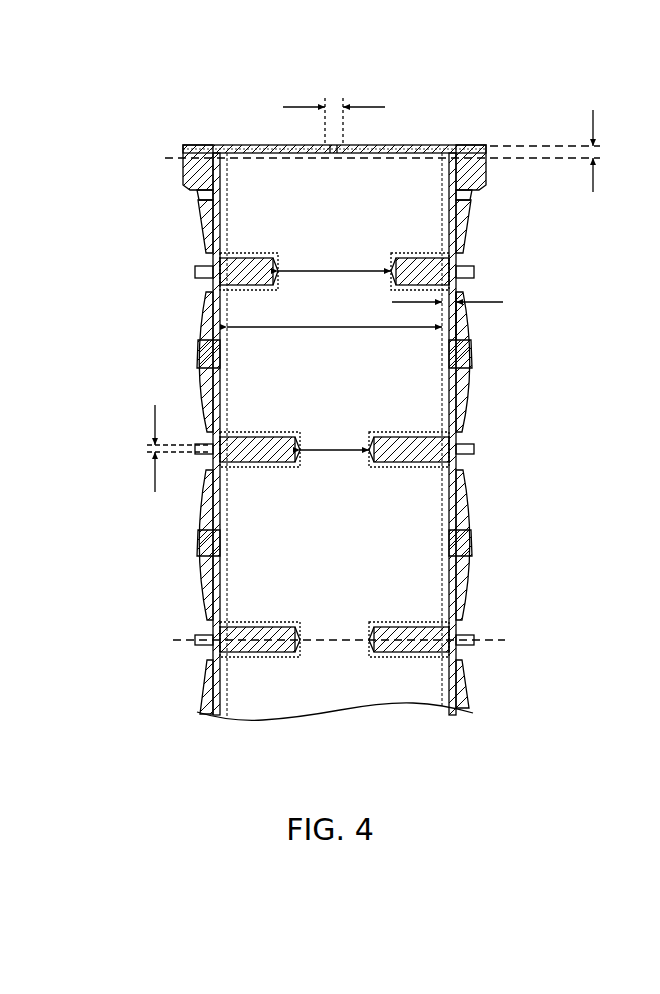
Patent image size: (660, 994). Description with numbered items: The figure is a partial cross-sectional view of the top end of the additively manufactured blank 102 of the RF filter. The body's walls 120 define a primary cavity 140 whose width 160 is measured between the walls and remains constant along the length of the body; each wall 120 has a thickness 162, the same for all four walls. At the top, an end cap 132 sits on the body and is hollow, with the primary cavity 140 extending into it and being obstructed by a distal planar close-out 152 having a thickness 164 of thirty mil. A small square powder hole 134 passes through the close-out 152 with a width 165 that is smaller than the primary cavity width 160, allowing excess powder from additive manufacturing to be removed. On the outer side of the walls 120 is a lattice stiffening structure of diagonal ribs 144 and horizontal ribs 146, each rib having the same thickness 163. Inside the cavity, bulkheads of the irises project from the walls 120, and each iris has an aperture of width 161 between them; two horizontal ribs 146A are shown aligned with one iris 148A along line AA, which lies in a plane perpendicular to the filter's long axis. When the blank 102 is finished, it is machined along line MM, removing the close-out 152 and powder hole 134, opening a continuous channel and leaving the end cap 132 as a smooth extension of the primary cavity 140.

The additively manufactured blank 102 is at (203, 111).
The walls 120 is at (455, 318).
The end cap 132 is at (473, 173).
The powder hole 134 is at (333, 145).
The primary cavity 140 is at (383, 385).
The diagonal ribs 144 is at (466, 386).
The horizontal ribs 146 is at (468, 450).
The horizontal ribs 146A is at (205, 637).
The iris 148A is at (275, 628).
The close-out structure 152 is at (408, 148).
The primary cavity width 160 is at (316, 332).
The aperture width 161 is at (323, 271).
The wall thickness 162 is at (492, 301).
The rib thickness 163 is at (155, 410).
The close-out thickness 164 is at (592, 112).
The powder hole width 165 is at (293, 106).
The line MM is at (167, 158).
The line AA is at (337, 638).